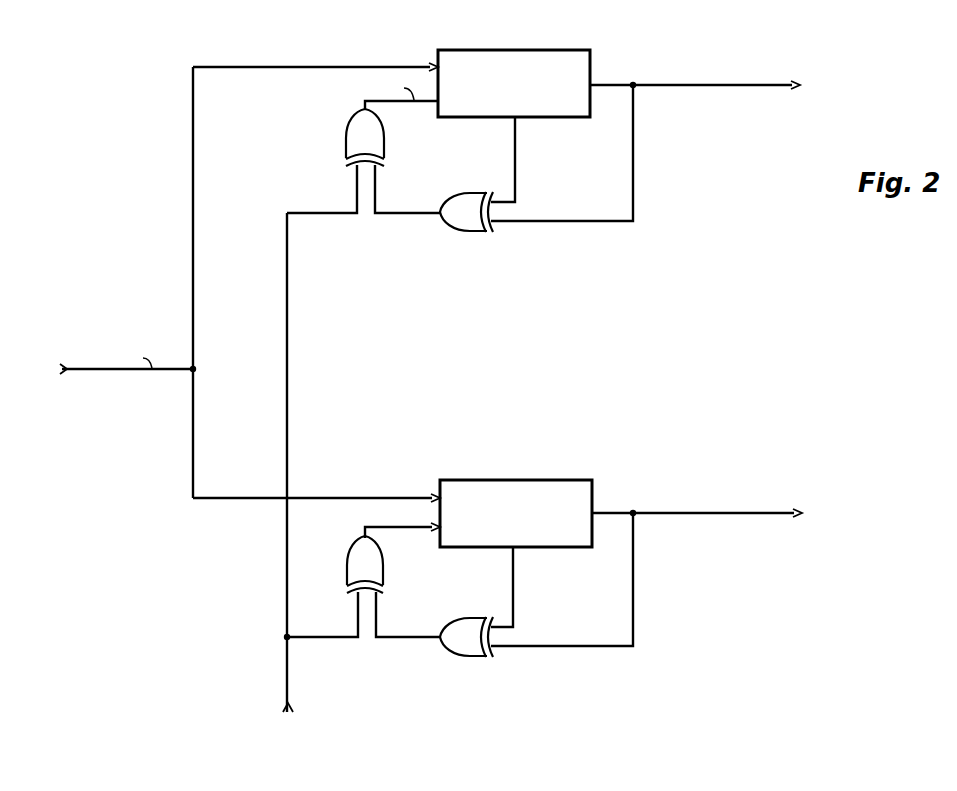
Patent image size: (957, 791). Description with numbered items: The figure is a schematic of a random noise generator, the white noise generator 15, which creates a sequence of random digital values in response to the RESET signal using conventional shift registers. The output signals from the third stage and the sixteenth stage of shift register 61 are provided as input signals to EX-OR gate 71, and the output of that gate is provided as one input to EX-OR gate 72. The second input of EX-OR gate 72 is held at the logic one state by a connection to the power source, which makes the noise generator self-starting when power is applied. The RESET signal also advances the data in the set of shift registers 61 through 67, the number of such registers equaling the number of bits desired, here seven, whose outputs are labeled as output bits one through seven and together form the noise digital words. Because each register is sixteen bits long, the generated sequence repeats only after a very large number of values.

The white noise generator 15 is at (775, 609).
The shift register 61 is at (546, 49).
The shift register 67 is at (546, 479).
The EX-OR gate 71 is at (457, 192).
The EX-OR gate 72 is at (382, 124).